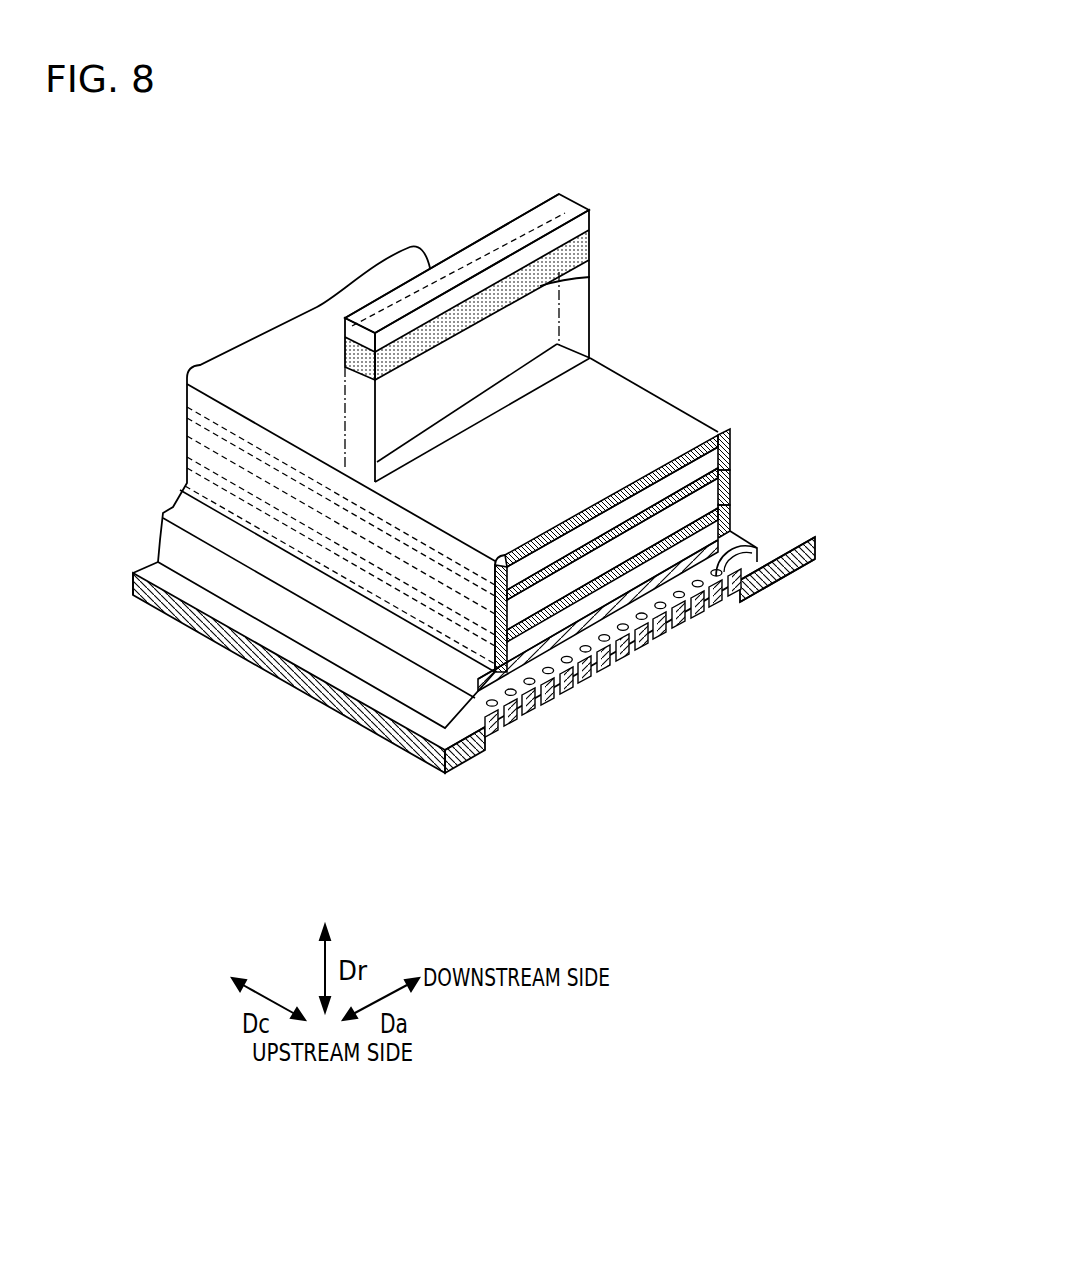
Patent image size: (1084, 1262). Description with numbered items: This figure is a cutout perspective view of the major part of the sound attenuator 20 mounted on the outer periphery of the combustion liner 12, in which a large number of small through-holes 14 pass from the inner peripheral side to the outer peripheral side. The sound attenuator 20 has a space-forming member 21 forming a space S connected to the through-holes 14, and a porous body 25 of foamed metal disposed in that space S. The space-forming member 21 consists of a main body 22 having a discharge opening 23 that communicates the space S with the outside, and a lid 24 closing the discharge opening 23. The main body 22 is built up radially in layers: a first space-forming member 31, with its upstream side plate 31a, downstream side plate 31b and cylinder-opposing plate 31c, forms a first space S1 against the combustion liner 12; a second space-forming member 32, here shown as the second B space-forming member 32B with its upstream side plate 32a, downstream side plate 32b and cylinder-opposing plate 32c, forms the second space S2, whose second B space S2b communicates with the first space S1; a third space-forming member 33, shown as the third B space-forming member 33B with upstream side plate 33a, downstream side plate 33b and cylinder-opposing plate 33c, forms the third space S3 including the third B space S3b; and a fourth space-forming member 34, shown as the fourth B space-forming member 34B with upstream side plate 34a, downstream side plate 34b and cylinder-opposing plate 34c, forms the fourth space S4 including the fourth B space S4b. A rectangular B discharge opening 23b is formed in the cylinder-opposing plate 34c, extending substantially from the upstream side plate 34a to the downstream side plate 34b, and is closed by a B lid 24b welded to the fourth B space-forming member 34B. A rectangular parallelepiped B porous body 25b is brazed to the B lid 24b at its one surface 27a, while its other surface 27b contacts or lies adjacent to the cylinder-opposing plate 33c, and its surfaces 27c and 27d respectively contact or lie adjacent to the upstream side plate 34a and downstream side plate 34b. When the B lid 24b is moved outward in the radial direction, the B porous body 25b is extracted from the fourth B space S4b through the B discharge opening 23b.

The combustion liner 12 is at (790, 592).
The through-holes 14 is at (680, 632).
The sound attenuator 20 is at (126, 400).
The space-forming member 21 is at (233, 402).
The main body 22 is at (654, 395).
The discharge opening 23 is at (341, 557).
The B discharge opening 23b is at (345, 455).
The lid 24 is at (452, 256).
The B lid 24b is at (403, 292).
The porous body 25 is at (467, 295).
The B porous body 25b is at (345, 353).
The one surface 27a is at (497, 258).
The other surface 27b is at (541, 289).
The one surface 27c is at (347, 360).
The other surface 27d is at (590, 242).
The first space-forming member 31 is at (722, 549).
The upstream side plate 31a is at (450, 716).
The downstream side plate 31b is at (784, 582).
The cylinder-opposing plate 31c is at (604, 640).
The second space-forming member 32 is at (340, 575).
The second B space-forming member 32B is at (730, 512).
The upstream side plate 32a is at (478, 640).
The downstream side plate 32b is at (730, 531).
The cylinder-opposing plate 32c is at (528, 618).
The third space-forming member 33 is at (341, 507).
The third B space-forming member 33B is at (730, 480).
The upstream side plate 33a is at (473, 608).
The downstream side plate 33b is at (728, 500).
The cylinder-opposing plate 33c is at (703, 477).
The fourth space-forming member 34 is at (501, 613).
The fourth B space-forming member 34B is at (724, 447).
The upstream side plate 34a is at (410, 528).
The downstream side plate 34b is at (732, 460).
The cylinder-opposing plate 34c is at (667, 457).
The space S is at (573, 351).
The first space S1 is at (722, 610).
The second space S2 is at (598, 609).
The second B space S2b is at (552, 627).
The third space S3 is at (612, 569).
The third B space S3b is at (682, 513).
The fourth space S4 is at (482, 420).
The fourth B space S4b is at (647, 497).